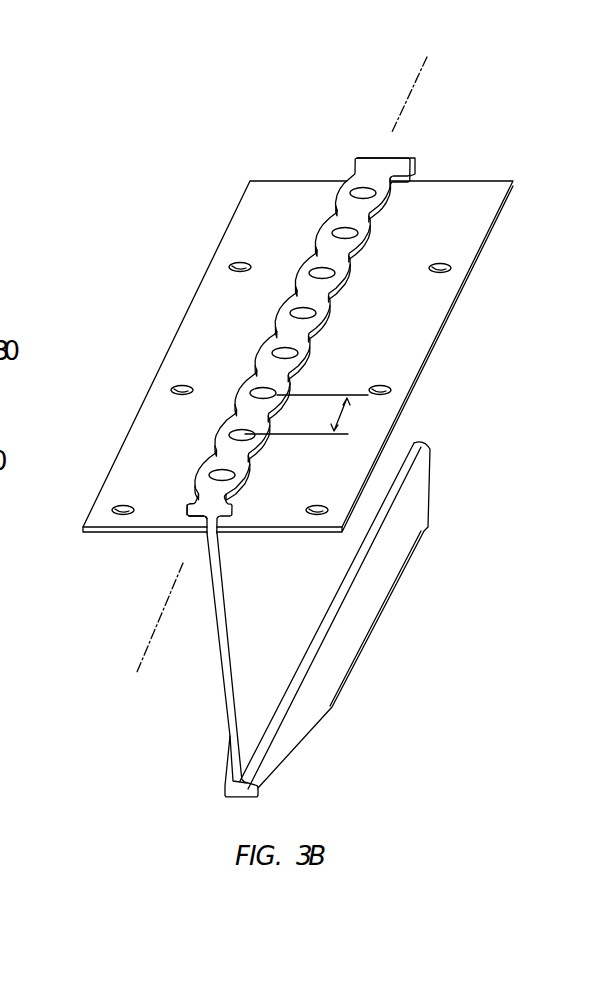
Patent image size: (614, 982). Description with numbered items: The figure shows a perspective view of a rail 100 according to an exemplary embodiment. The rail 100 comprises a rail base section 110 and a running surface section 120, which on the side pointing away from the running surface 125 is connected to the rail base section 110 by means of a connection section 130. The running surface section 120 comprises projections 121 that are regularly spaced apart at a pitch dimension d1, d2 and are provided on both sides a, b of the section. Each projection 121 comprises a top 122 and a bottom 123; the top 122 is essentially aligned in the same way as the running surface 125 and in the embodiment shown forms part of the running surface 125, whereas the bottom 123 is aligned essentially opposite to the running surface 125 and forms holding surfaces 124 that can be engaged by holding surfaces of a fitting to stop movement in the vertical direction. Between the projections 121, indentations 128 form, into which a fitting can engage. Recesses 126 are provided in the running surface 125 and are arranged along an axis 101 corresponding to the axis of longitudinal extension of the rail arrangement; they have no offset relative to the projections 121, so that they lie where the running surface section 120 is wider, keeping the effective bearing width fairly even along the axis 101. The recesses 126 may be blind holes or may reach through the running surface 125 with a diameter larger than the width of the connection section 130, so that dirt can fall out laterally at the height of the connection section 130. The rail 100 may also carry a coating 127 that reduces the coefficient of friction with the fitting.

The rail 100 is at (130, 210).
The axis 101 is at (425, 72).
The rail base section 110 is at (473, 240).
The running surface section 120 is at (205, 462).
The projections 121 is at (237, 398).
The top 122 is at (188, 495).
The bottom 123 is at (192, 520).
The holding surfaces 124 is at (207, 518).
The running surface 125 is at (372, 162).
The recesses 126 is at (362, 190).
The coating 127 is at (370, 162).
The indentations 128 is at (270, 330).
The connection section 130 is at (205, 532).
The side a is at (407, 203).
The side b is at (330, 196).
The pitch dimension d1 is at (340, 412).
The pitch dimension d2 is at (340, 414).